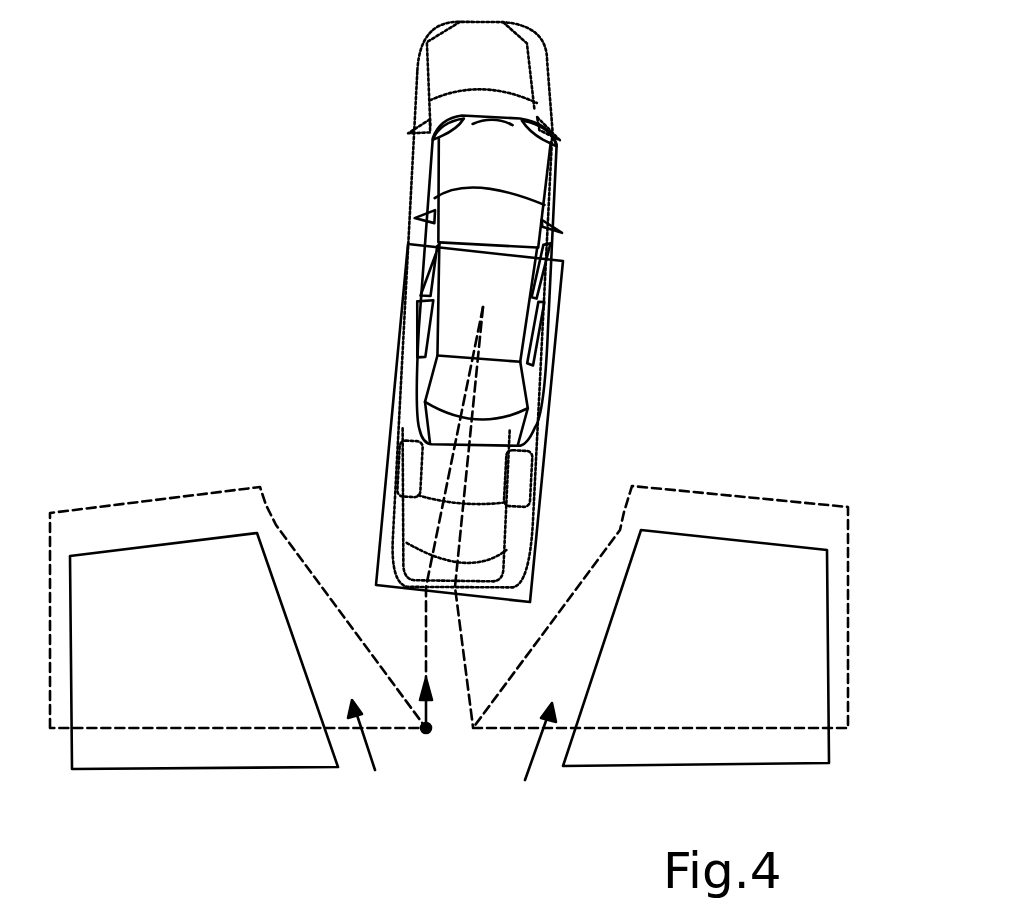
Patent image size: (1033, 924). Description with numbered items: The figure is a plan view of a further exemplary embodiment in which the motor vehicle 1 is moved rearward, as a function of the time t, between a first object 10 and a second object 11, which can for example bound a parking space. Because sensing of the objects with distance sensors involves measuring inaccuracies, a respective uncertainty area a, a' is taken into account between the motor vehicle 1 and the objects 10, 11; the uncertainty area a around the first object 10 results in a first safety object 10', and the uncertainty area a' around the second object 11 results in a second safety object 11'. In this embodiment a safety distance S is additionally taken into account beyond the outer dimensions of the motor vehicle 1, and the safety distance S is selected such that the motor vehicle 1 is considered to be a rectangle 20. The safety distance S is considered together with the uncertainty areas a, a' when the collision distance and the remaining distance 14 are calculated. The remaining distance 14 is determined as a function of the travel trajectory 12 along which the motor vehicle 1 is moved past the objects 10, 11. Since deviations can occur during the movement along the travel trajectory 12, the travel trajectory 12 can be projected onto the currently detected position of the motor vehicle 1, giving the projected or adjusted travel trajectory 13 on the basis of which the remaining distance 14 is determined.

The motor vehicle 1 is at (562, 182).
The first object 10 is at (204, 684).
The first safety object 10' is at (238, 571).
The second object 11 is at (696, 680).
The second safety object 11' is at (660, 568).
The travel trajectory 12 is at (462, 656).
The projected or adjusted travel trajectory 13 is at (425, 648).
The remaining distance 14 is at (430, 722).
The rectangle 20 is at (384, 497).
The safety distance S is at (522, 583).
The uncertainty area a is at (366, 750).
The uncertainty area a' is at (533, 758).
The time t is at (365, 183).